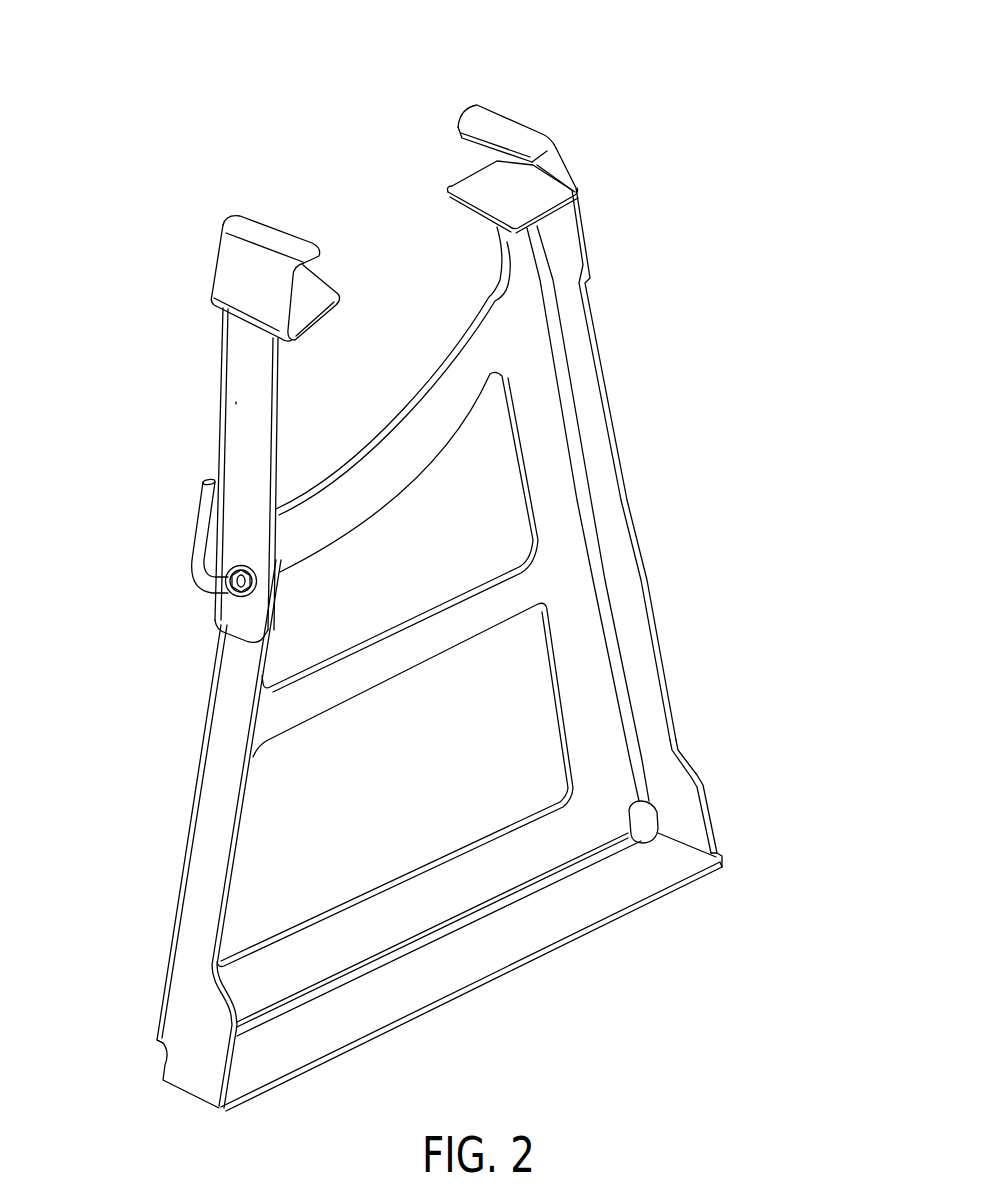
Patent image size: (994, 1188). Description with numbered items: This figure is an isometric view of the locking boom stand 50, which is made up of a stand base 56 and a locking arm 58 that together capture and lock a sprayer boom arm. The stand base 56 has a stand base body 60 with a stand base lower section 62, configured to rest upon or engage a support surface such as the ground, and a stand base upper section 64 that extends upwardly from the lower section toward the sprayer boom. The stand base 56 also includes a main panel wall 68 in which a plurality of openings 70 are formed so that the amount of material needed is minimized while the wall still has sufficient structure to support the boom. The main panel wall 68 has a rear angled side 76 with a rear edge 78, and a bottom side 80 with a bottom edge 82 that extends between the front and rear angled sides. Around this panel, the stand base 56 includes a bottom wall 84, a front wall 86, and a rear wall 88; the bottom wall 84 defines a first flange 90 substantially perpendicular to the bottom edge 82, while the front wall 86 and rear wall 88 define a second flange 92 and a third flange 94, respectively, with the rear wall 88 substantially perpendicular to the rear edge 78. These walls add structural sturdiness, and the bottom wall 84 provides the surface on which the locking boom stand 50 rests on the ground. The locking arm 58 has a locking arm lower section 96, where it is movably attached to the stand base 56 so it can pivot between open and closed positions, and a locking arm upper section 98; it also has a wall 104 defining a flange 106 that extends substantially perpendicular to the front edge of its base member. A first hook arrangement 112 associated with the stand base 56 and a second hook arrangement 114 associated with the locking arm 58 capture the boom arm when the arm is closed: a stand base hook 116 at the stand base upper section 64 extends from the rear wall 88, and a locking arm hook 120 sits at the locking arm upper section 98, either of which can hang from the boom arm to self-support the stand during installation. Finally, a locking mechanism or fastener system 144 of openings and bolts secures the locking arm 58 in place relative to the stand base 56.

The locking boom stand 50 is at (230, 138).
The stand base 56 is at (133, 1001).
The locking arm 58 is at (200, 428).
The stand base body 60 is at (406, 676).
The stand base lower section 62 is at (737, 834).
The stand base upper section 64 is at (637, 305).
The main panel wall 68 is at (455, 622).
The openings 70 is at (498, 484).
The rear angled side 76 is at (588, 712).
The rear edge 78 is at (612, 642).
The bottom side 80 is at (357, 938).
The bottom edge 82 is at (440, 930).
The bottom wall 84 is at (545, 923).
The front wall 86 is at (216, 749).
The rear wall 88 is at (622, 573).
The first flange 90 is at (620, 880).
The second flange 92 is at (196, 906).
The third flange 94 is at (655, 751).
The locking arm lower section 96 is at (193, 628).
The locking arm upper section 98 is at (195, 311).
The wall 104 is at (236, 403).
The flange 106 is at (226, 457).
The first hook arrangement 112 is at (532, 104).
The second hook arrangement 114 is at (296, 216).
The stand base hook 116 is at (533, 138).
The locking arm hook 120 is at (213, 262).
The locking mechanism or fastener system 144 is at (172, 590).